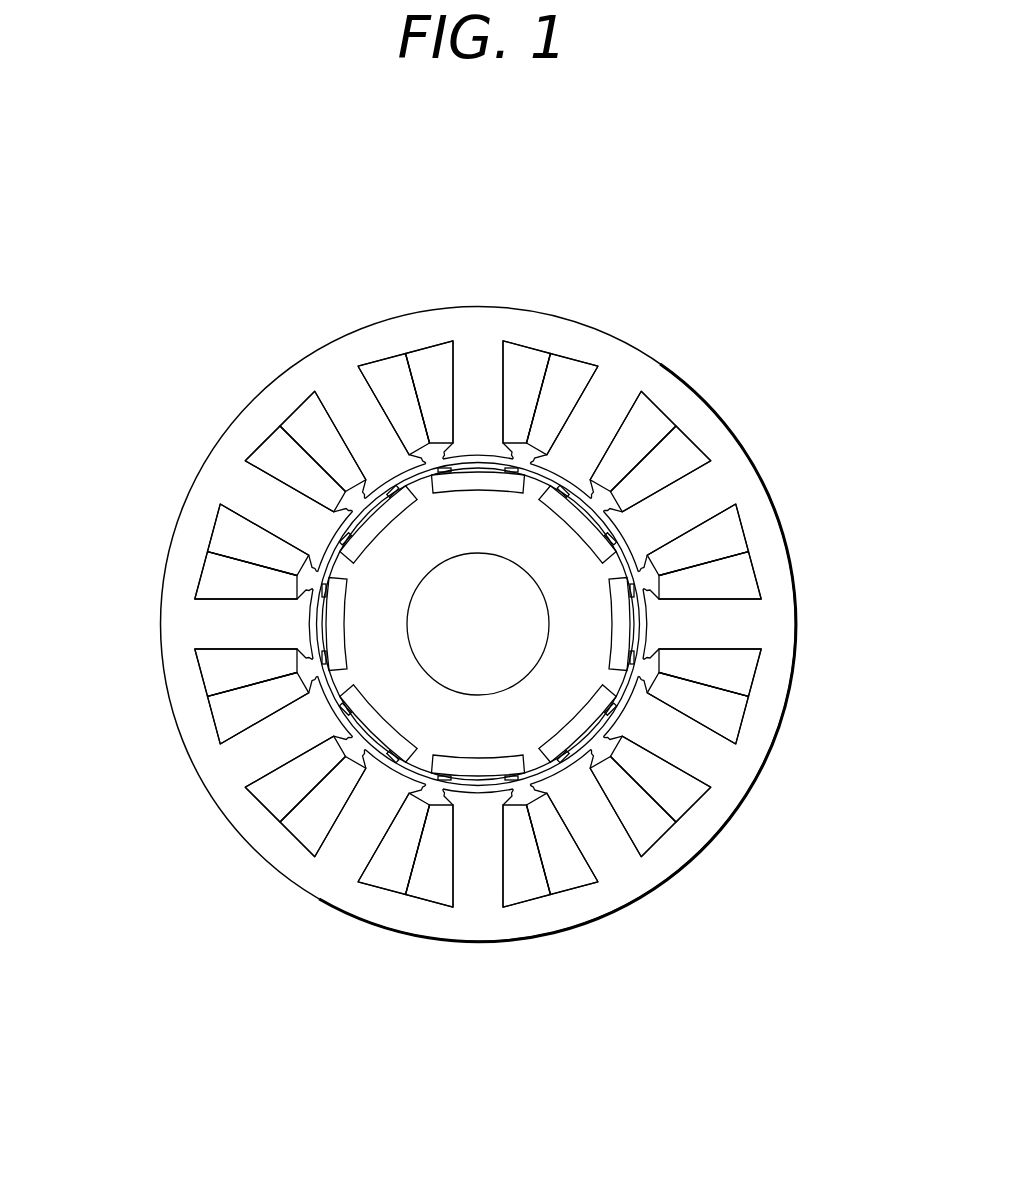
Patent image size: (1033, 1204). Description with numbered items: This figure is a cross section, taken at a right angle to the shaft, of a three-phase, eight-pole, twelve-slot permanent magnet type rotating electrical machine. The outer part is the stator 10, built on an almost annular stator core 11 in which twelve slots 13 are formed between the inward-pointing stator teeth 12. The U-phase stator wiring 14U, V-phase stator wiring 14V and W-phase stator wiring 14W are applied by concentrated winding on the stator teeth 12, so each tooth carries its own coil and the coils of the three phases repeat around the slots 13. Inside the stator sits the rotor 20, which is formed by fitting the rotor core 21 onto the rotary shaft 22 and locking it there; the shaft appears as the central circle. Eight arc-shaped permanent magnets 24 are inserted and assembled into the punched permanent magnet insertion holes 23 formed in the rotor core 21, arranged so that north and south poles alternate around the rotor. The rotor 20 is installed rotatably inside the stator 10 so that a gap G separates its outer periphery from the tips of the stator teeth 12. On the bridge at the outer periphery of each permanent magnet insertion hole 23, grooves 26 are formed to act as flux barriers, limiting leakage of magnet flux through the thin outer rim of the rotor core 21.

The stator 10 is at (160, 628).
The stator core 11 is at (222, 477).
The stator teeth 12 is at (355, 395).
The slots 13 is at (207, 715).
The U-phase stator wiring 14U is at (436, 372).
The V-phase stator wiring 14V is at (573, 370).
The W-phase stator wiring 14W is at (305, 425).
The rotor 20 is at (500, 636).
The rotor core 21 is at (474, 516).
The rotary shaft 22 is at (495, 663).
The permanent magnet insertion holes 23 is at (480, 780).
The permanent magnets 24 is at (595, 535).
The grooves 26 is at (640, 647).
The gap G is at (528, 463).